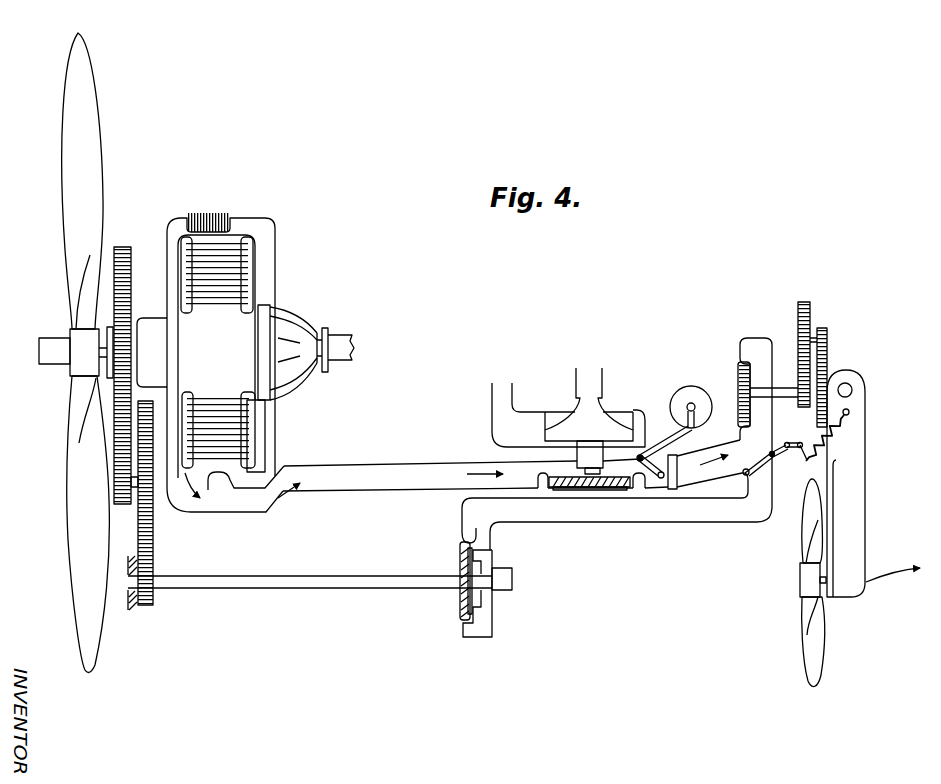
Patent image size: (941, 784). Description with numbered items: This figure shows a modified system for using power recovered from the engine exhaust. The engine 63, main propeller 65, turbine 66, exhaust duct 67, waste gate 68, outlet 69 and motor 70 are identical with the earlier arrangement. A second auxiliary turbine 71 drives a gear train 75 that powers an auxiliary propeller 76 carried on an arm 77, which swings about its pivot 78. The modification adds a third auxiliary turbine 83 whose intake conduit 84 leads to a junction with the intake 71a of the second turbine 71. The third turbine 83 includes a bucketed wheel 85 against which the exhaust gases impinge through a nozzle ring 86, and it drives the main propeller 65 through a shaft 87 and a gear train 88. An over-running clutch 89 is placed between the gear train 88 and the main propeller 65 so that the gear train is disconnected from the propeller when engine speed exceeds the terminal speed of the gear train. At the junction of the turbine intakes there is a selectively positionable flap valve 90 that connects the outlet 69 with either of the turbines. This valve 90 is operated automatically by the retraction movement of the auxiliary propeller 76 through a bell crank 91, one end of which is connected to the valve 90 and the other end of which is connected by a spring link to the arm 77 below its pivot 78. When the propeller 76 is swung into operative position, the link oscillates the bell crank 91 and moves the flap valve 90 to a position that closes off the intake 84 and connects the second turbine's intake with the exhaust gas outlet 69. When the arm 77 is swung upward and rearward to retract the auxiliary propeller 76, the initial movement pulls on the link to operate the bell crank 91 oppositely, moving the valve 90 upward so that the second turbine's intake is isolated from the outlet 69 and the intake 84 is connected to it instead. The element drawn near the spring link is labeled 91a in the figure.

The engine 63 is at (217, 213).
The propeller 65 is at (86, 144).
The turbine 66 is at (590, 491).
The exhaust duct 67 is at (398, 477).
The waste gate 68 is at (658, 480).
The outlet 69 is at (640, 490).
The motor 70 is at (684, 392).
The second auxiliary turbine 71 is at (736, 366).
The intake 71a is at (721, 452).
The gear train 75 is at (819, 322).
The auxiliary propeller 76 is at (812, 642).
The arm 77 is at (850, 513).
The pivot 78 is at (850, 388).
The third auxiliary turbine 83 is at (459, 537).
The intake conduit 84 is at (730, 508).
The bucketed wheel 85 is at (462, 600).
The nozzle ring 86 is at (478, 550).
The shaft 87 is at (335, 575).
The gear train 88 is at (131, 514).
The over-running clutch 89 is at (136, 327).
The flap valve 90 is at (760, 471).
The bell crank 91 is at (789, 442).
The spring 91a is at (834, 444).